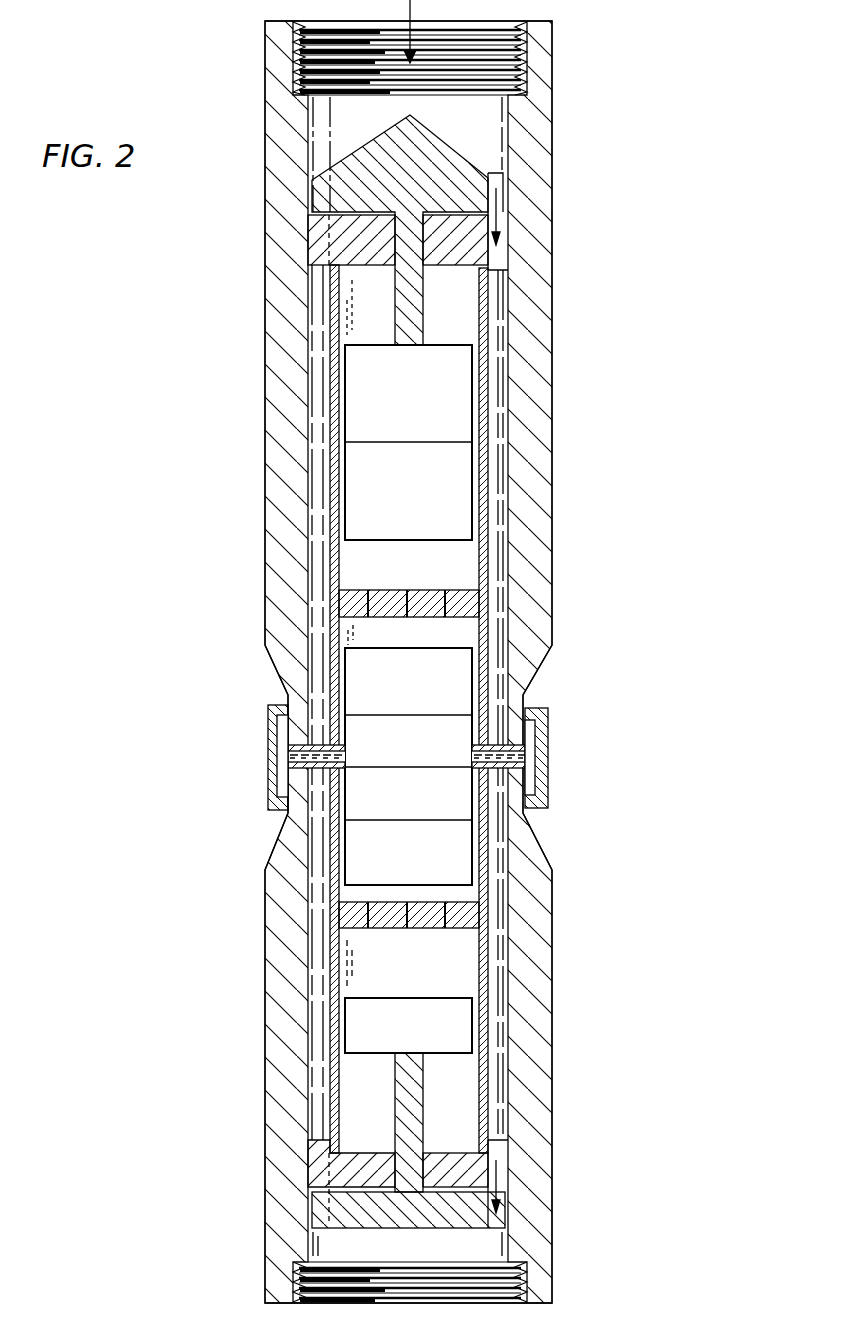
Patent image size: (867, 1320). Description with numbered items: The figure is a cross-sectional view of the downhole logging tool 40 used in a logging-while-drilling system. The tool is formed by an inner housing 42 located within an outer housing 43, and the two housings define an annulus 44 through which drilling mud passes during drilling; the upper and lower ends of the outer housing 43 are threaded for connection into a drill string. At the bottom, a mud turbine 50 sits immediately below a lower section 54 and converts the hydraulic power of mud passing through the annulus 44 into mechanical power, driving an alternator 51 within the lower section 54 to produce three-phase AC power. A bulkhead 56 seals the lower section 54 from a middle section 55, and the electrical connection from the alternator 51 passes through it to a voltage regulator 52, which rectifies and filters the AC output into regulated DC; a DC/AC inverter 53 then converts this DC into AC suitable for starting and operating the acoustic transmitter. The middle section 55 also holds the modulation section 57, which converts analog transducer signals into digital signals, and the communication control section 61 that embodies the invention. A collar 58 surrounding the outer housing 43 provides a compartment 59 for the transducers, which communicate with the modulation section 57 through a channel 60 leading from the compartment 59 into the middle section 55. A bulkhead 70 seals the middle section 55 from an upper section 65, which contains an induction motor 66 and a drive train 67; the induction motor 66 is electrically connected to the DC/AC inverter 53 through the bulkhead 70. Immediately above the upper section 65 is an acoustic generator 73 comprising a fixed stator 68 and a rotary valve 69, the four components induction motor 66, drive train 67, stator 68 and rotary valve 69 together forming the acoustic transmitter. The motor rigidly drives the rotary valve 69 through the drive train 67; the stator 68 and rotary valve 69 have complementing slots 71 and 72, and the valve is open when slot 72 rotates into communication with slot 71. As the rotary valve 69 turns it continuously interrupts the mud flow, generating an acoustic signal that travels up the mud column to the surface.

The downhole logging tool 40 is at (243, 371).
The inner housing 42 is at (487, 530).
The outer housing 43 is at (552, 433).
The annulus 44 is at (493, 473).
The mud turbine 50 is at (318, 1213).
The alternator 51 is at (425, 996).
The voltage regulator 52 is at (345, 859).
The DC/AC inverter 53 is at (345, 808).
The lower section 54 is at (422, 954).
The middle section 55 is at (422, 639).
The bulkhead 56 is at (338, 915).
The modulation section 57 is at (345, 729).
The collar 58 is at (548, 720).
The compartment 59 is at (530, 778).
The channel 60 is at (538, 756).
The communication control section 61 is at (345, 656).
The upper section 65 is at (378, 288).
The induction motor 66 is at (423, 543).
The drive train 67 is at (433, 344).
The stator 68 is at (340, 243).
The rotary valve 69 is at (385, 135).
The bulkhead 70 is at (338, 601).
The slot 71 is at (497, 247).
The slot 72 is at (493, 178).
The acoustic generator 73 is at (483, 139).